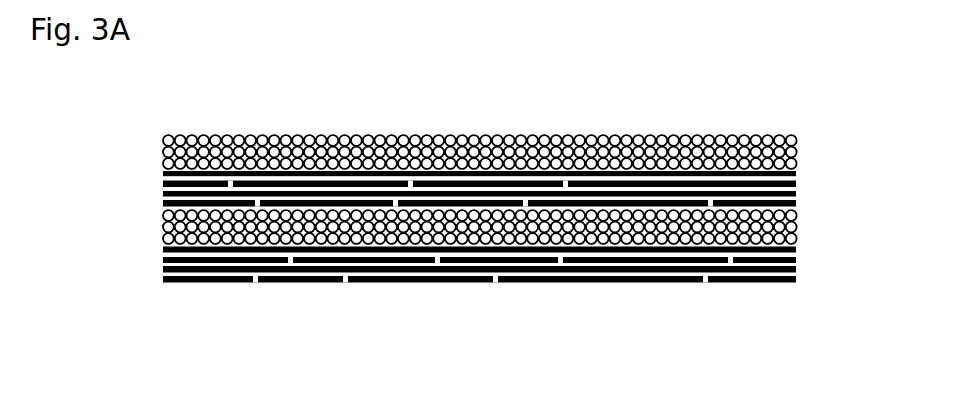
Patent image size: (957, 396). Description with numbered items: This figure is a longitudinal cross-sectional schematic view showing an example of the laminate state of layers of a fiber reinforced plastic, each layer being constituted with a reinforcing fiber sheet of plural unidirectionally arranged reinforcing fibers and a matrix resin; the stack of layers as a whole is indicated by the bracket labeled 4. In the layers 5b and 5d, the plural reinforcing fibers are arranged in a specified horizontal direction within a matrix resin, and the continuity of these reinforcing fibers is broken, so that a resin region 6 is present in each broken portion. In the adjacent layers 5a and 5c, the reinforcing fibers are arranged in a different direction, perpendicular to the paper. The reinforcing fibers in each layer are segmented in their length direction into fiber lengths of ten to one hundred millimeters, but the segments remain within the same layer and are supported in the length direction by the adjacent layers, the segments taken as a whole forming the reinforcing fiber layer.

The laminated body 4 is at (485, 243).
The layer 5a is at (151, 135).
The layer 5b is at (151, 171).
The layer 5c is at (151, 210).
The layer 5d is at (446, 301).
The resin region 6 is at (367, 259).